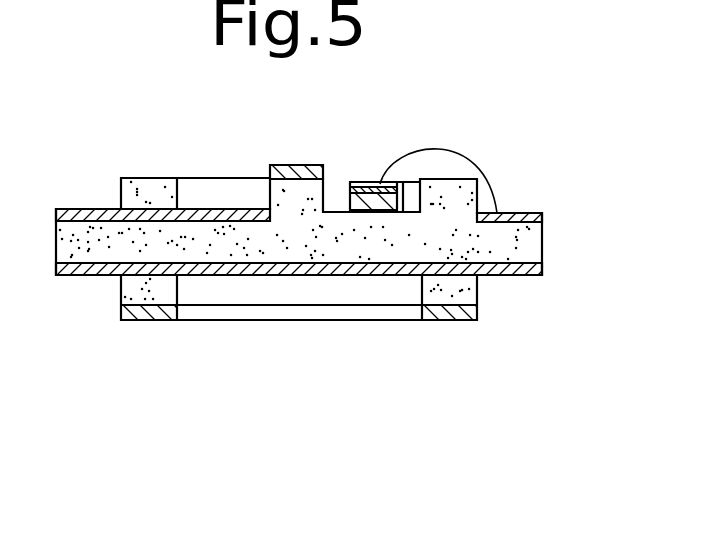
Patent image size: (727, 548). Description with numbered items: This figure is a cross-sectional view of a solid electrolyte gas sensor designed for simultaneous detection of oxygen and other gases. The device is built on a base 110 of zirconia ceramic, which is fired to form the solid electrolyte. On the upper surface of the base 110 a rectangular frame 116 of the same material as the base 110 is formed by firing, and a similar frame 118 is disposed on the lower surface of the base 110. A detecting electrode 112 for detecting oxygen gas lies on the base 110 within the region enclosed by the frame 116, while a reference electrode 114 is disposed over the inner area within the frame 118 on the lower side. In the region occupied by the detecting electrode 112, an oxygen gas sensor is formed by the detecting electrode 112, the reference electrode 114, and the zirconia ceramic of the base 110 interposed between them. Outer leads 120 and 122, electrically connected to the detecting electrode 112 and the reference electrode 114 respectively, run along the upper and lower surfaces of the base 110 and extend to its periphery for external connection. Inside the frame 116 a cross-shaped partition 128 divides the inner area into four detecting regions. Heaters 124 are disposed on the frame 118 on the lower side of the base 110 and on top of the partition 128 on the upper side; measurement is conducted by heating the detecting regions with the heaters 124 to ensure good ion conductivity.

The base 110 is at (533, 235).
The detecting electrode 112 is at (224, 212).
The reference electrode 114 is at (287, 275).
The frame 116 is at (153, 186).
The frame 118 is at (477, 295).
The outer lead 120 is at (87, 208).
The outer lead 122 is at (93, 275).
The heater 124 is at (300, 170).
The partition 128 is at (326, 192).